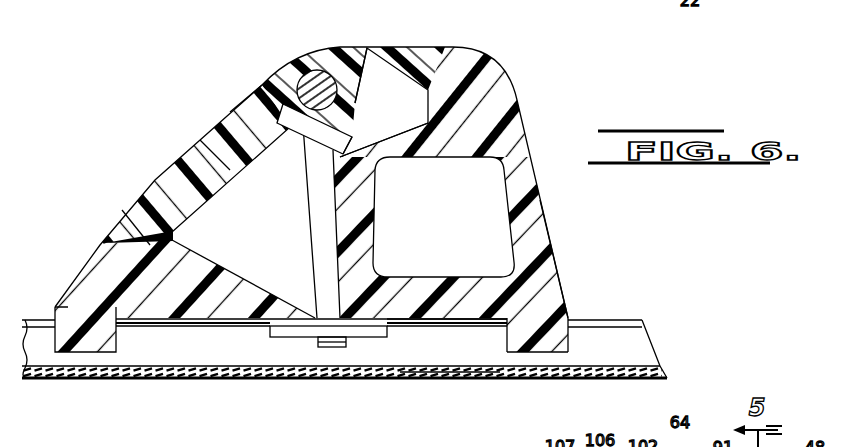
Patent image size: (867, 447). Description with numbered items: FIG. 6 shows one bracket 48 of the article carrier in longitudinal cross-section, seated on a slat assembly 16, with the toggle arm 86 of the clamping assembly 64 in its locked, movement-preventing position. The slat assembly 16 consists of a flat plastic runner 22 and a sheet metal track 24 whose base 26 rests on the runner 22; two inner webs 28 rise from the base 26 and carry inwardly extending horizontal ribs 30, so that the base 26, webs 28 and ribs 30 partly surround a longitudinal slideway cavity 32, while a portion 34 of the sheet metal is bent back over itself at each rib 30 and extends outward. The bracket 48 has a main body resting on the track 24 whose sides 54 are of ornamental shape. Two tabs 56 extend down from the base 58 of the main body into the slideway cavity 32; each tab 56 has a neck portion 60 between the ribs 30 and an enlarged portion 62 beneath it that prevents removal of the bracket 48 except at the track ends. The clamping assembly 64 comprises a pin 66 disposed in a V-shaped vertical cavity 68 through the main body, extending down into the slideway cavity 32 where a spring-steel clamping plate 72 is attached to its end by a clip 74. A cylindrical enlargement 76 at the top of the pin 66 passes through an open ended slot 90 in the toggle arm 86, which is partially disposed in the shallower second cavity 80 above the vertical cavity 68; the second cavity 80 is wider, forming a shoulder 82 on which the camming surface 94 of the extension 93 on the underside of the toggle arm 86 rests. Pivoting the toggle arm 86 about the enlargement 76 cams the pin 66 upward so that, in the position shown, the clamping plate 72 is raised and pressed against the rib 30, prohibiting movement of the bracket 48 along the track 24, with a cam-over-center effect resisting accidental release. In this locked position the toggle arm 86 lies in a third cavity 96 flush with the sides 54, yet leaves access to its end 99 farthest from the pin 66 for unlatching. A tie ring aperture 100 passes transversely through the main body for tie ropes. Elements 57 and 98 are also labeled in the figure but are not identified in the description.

The slat assembly 16 is at (218, 385).
The runner 22 is at (483, 373).
The track 24 is at (638, 337).
The base 26 is at (653, 363).
The inner webs 28 is at (177, 352).
The ribs 30 is at (600, 318).
The slideway cavity 32 is at (400, 354).
The portion 34 is at (630, 318).
The bracket 48 is at (503, 78).
The sides 54 is at (497, 83).
The tabs 56 is at (93, 343).
The body 57 is at (517, 150).
The base 58 is at (460, 327).
The neck portion 60 is at (563, 307).
The enlarged portion 62 is at (570, 315).
The clamping assembly 64 is at (262, 75).
The pin 66 is at (322, 252).
The vertical cavity 68 is at (260, 238).
The clamping plate 72 is at (373, 337).
The clip 74 is at (313, 347).
The enlargement 76 is at (310, 74).
The second cavity 80 is at (392, 119).
The shoulder 82 is at (384, 133).
The toggle arm 86 is at (233, 123).
The open ended slot 90 is at (356, 104).
The extension 93 is at (340, 157).
The camming surface 94 is at (312, 163).
The third cavity 96 is at (103, 258).
The arm surface 98 is at (213, 130).
The end 99 is at (120, 220).
The tie ring aperture 100 is at (430, 219).